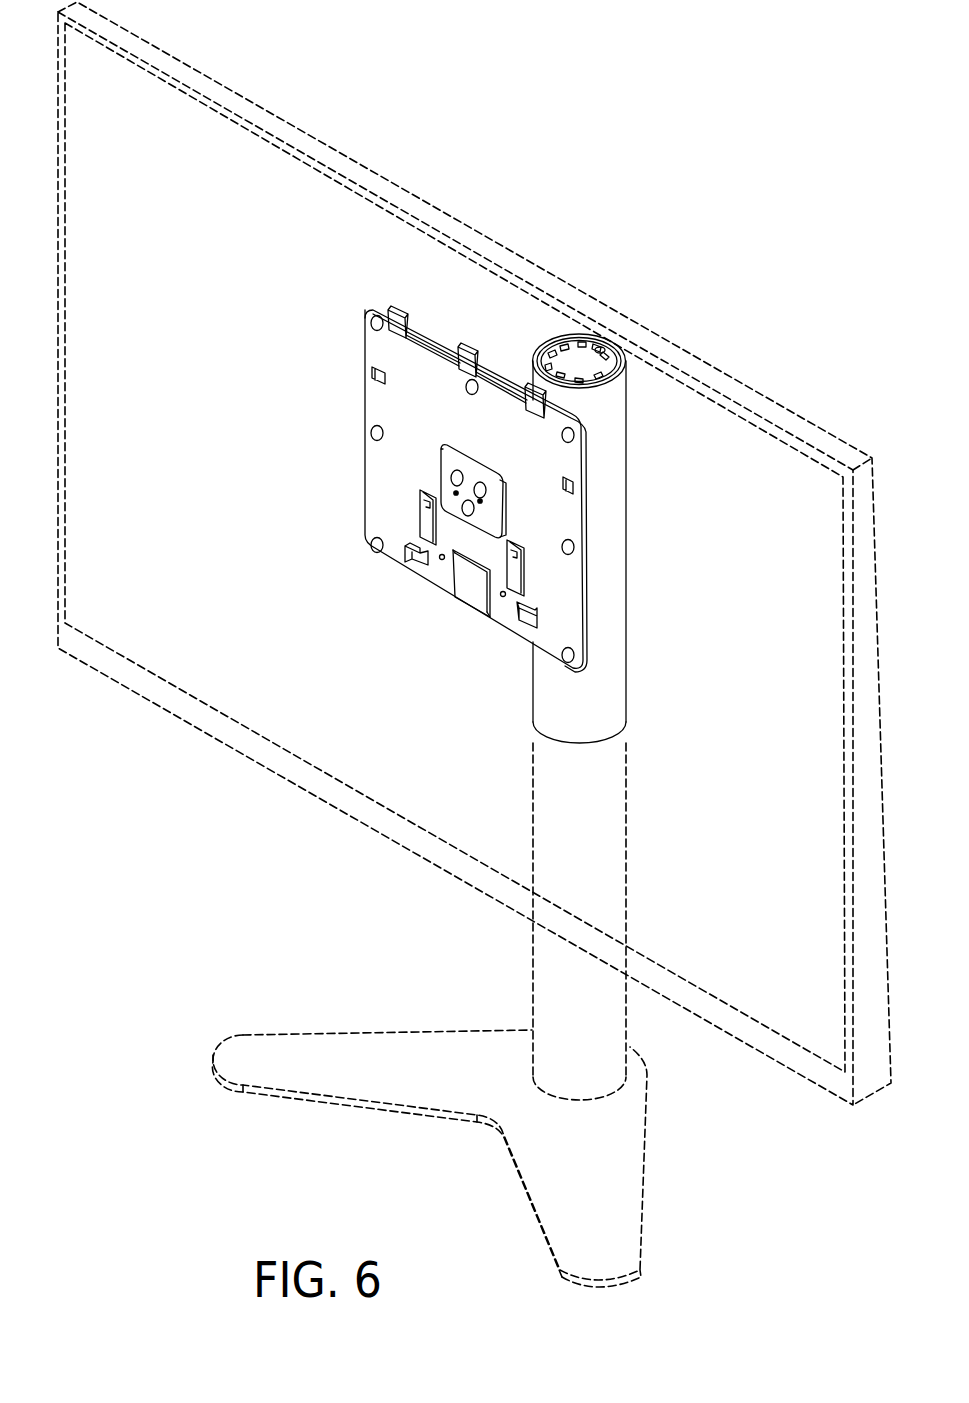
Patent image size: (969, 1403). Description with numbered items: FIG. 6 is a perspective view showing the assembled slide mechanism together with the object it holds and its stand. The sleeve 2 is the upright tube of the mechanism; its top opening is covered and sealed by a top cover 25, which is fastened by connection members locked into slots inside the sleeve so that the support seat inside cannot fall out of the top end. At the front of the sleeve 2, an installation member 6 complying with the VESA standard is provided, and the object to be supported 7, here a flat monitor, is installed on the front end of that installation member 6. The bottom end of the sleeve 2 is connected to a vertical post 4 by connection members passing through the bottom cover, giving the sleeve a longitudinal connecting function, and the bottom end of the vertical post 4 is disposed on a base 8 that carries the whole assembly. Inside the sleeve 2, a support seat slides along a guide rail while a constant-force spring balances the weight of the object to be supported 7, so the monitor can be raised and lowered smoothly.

The sleeve 2 is at (613, 443).
The vertical post 4 is at (532, 928).
The installation member 6 is at (377, 353).
The object to be supported 7 is at (710, 365).
The base 8 is at (357, 1032).
The top cover 25 is at (550, 357).